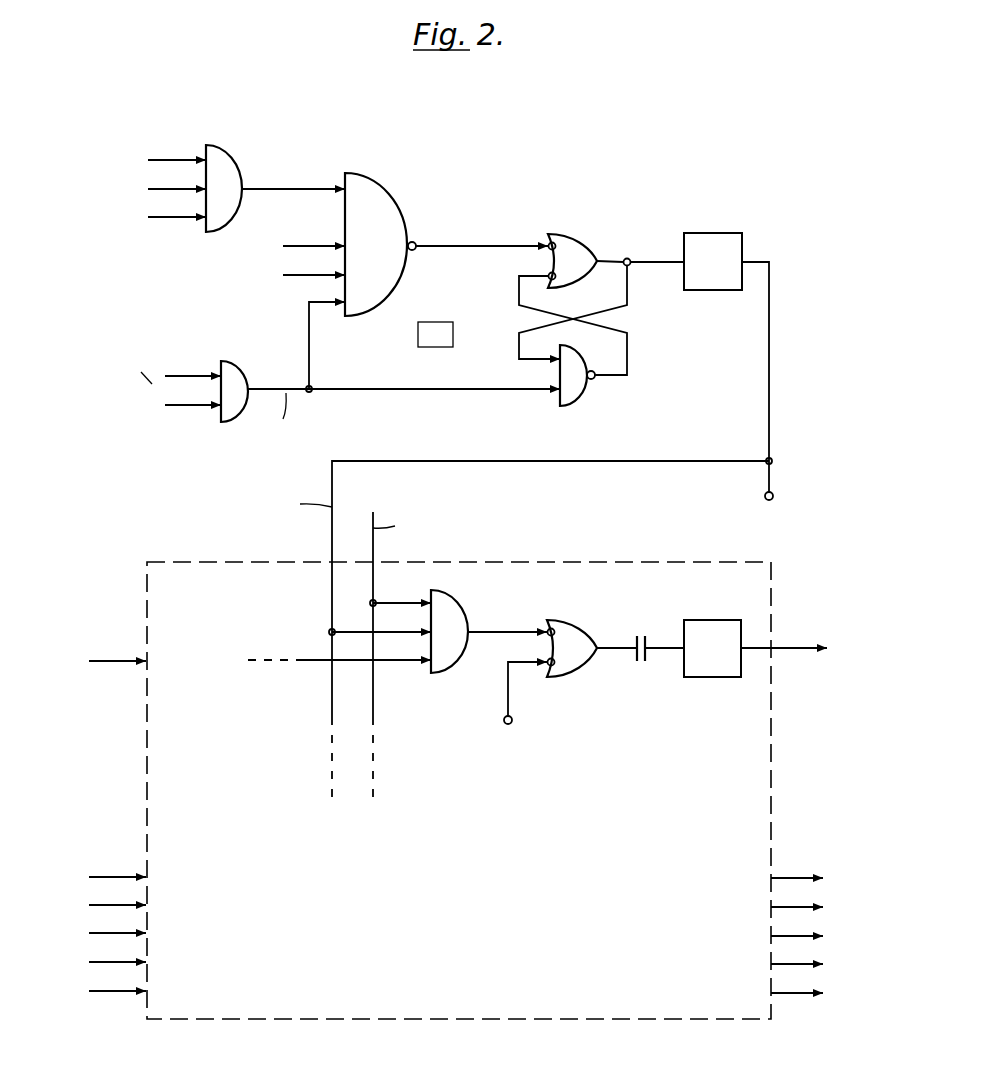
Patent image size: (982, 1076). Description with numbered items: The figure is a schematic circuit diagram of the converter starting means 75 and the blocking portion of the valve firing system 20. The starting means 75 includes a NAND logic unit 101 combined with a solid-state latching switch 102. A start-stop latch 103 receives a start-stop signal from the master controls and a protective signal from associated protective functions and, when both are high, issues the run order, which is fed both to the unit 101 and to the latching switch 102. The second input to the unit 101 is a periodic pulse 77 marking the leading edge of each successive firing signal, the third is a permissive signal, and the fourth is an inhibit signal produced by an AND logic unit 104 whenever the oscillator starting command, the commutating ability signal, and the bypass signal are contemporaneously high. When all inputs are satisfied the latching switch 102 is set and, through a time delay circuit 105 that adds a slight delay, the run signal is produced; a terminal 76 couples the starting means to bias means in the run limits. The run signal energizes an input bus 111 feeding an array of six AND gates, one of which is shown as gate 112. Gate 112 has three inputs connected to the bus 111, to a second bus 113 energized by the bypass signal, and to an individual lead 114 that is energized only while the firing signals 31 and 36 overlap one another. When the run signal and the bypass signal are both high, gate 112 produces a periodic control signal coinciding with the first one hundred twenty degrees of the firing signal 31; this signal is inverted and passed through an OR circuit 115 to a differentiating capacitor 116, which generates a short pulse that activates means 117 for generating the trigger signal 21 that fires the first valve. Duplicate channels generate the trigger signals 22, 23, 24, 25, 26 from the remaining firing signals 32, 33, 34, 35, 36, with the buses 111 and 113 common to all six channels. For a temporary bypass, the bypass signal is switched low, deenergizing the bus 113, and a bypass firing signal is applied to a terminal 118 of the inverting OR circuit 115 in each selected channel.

The valve firing system 20 is at (145, 566).
The trigger signal 21 is at (798, 648).
The trigger signal 22 is at (813, 877).
The trigger signal 23 is at (813, 906).
The trigger signal 24 is at (813, 935).
The trigger signal 25 is at (813, 963).
The trigger signal 26 is at (813, 992).
The firing signal 31 is at (104, 660).
The firing signal 32 is at (104, 876).
The firing signal 33 is at (104, 904).
The firing signal 34 is at (104, 932).
The firing signal 35 is at (104, 961).
The firing signal 36 is at (104, 990).
The converter starting means 75 is at (435, 334).
The terminal 76 is at (773, 498).
The periodic pulse 77 is at (301, 245).
The NAND logic unit 101 is at (396, 202).
The solid-state latching switch 102 is at (612, 298).
The start-stop latch 103 is at (242, 363).
The AND logic unit 104 is at (226, 148).
The time delay circuit 105 is at (706, 232).
The input bus 111 is at (331, 592).
The AND logic gate 112 is at (463, 608).
The second bus 113 is at (374, 581).
The individual lead 114 is at (316, 664).
The inverting OR circuit 115 is at (577, 623).
The differentiating capacitor 116 is at (641, 668).
The trigger signal generating means 117 is at (709, 618).
The terminal 118 is at (504, 722).